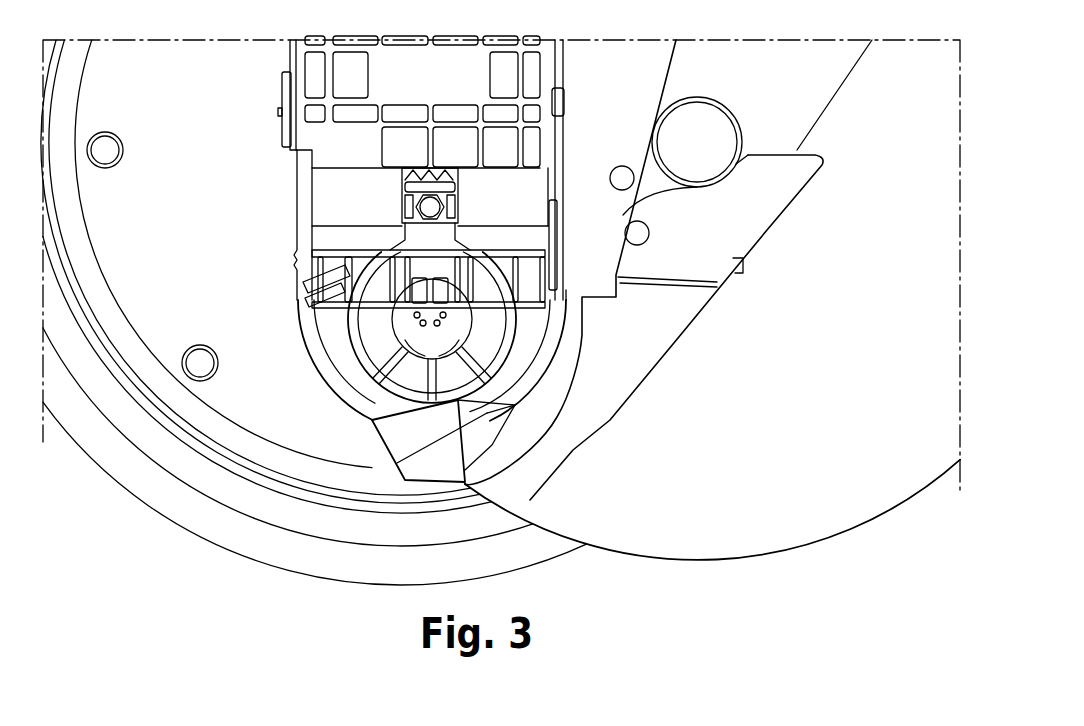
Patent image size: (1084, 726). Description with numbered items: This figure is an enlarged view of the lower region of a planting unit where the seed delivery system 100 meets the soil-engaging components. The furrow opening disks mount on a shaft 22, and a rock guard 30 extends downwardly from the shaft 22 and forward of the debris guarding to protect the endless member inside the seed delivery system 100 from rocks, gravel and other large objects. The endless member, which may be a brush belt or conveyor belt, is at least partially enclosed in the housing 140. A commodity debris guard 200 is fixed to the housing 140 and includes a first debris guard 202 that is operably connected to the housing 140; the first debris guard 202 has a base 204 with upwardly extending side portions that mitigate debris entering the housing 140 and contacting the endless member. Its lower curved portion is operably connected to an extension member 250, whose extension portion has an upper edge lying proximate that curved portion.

The shaft 22 is at (715, 164).
The rock guard 30 is at (597, 433).
The seed delivery system 100 is at (592, 550).
The housing 140 is at (288, 47).
The commodity debris guard 200 is at (280, 267).
The first debris guard 202 is at (333, 370).
The base 204 is at (528, 420).
The extension member 250 is at (370, 450).